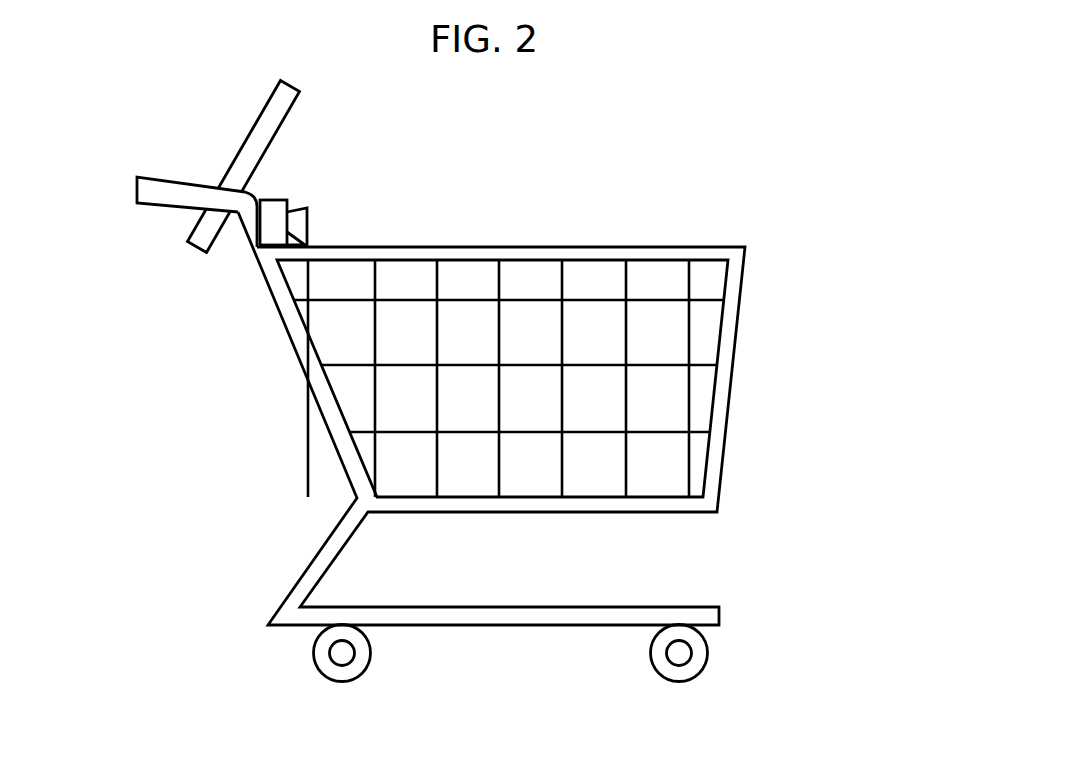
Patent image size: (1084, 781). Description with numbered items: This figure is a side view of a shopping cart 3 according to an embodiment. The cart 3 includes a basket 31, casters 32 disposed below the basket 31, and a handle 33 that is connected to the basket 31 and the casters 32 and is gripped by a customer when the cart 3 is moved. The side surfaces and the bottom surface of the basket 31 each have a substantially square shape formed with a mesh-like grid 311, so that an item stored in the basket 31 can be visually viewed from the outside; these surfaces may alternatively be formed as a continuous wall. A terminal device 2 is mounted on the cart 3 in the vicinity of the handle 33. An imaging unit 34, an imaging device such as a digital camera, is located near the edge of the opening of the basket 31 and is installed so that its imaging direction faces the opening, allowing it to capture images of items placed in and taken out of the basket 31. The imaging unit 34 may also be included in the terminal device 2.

The terminal device 2 is at (292, 80).
The cart 3 is at (478, 374).
The basket 31 is at (522, 247).
The mesh-like grid 311 is at (630, 332).
The casters 32 is at (371, 653).
The handle 33 is at (160, 177).
The imaging unit 34 is at (284, 198).